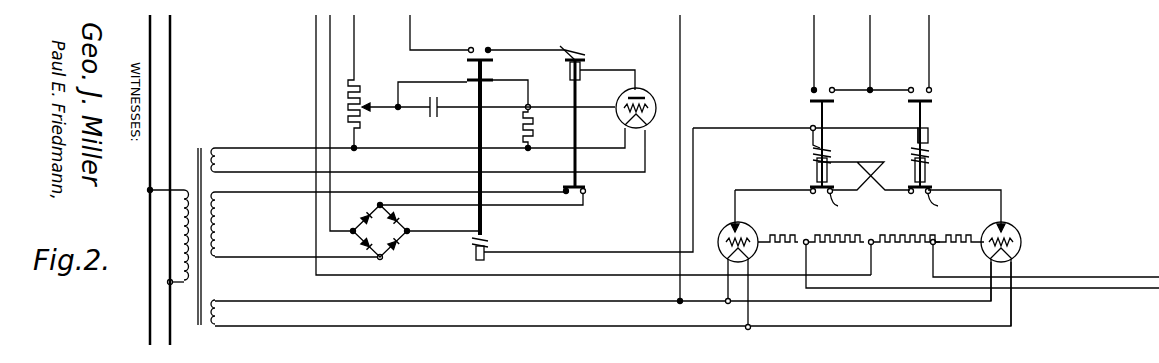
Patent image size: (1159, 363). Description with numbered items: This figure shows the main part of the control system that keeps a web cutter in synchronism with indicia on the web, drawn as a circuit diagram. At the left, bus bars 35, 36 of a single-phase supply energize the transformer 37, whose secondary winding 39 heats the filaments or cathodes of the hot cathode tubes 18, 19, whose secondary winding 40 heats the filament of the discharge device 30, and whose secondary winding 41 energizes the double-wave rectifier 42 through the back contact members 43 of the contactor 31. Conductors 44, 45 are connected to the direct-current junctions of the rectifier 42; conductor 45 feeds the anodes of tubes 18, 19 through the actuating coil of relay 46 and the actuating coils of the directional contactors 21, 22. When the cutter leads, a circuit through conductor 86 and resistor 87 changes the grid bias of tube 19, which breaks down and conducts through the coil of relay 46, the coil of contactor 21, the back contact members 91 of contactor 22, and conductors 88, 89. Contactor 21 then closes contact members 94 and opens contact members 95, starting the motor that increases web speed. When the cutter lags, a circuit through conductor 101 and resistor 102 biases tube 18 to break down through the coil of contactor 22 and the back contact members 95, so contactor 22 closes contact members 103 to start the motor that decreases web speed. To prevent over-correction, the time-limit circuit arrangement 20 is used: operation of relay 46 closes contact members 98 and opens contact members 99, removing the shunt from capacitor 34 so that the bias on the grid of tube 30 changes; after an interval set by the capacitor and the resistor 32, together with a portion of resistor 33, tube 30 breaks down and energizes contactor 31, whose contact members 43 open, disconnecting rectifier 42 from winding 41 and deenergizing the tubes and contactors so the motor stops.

The hot cathode tube 18 is at (782, 230).
The hot cathode tube 19 is at (1050, 232).
The time-limit circuit arrangement 20 is at (549, 40).
The directional contactor 21 is at (789, 160).
The directional contactor 22 is at (973, 158).
The discharge device 30 is at (671, 86).
The contactor 31 is at (606, 99).
The resistor 32 is at (534, 124).
The resistor 33 is at (366, 124).
The capacitor 34 is at (439, 114).
The bus bar 35 is at (150, 323).
The bus bar 36 is at (170, 330).
The transformer 37 is at (246, 284).
The secondary winding 39 is at (219, 313).
The secondary winding 40 is at (218, 160).
The secondary winding 41 is at (219, 228).
The double-wave rectifier 42 is at (391, 245).
The back contact members 43 is at (588, 200).
The conductor 44 is at (316, 29).
The conductor 45 is at (456, 225).
The relay 46 is at (508, 138).
The conductor 86 is at (1158, 44).
The resistor 87 is at (955, 247).
The conductor 88 is at (822, 303).
The conductor 89 is at (680, 38).
The back contact members 91 is at (942, 204).
The contact members 94 is at (832, 86).
The contact members 95 is at (842, 204).
The contact members 98 is at (489, 45).
The contact members 99 is at (485, 83).
The conductor 101 is at (810, 263).
The resistor 102 is at (790, 250).
The contact members 103 is at (912, 86).